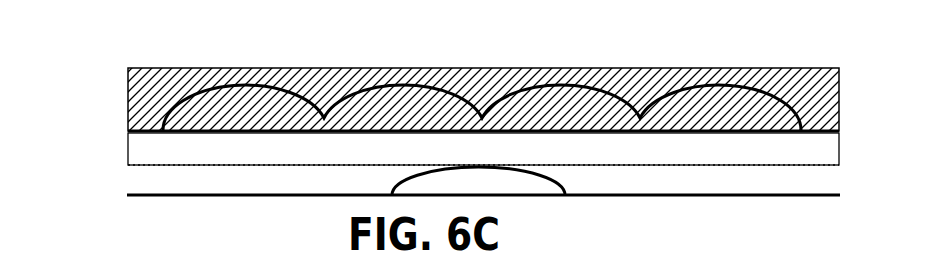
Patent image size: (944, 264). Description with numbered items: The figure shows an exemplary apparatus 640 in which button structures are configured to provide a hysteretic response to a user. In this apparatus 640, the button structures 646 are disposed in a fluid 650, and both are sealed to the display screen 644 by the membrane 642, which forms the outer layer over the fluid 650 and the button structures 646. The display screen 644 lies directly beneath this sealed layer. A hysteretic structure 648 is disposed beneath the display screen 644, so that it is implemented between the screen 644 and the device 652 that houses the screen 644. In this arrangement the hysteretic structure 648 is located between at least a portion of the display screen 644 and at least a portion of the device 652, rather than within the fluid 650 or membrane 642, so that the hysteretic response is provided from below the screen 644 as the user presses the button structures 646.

The apparatus 640 is at (150, 48).
The membrane 642 is at (484, 68).
The display screen 644 is at (145, 152).
The button structures 646 is at (722, 84).
The hysteretic structure 648 is at (395, 185).
The fluid 650 is at (323, 90).
The device 652 is at (127, 195).